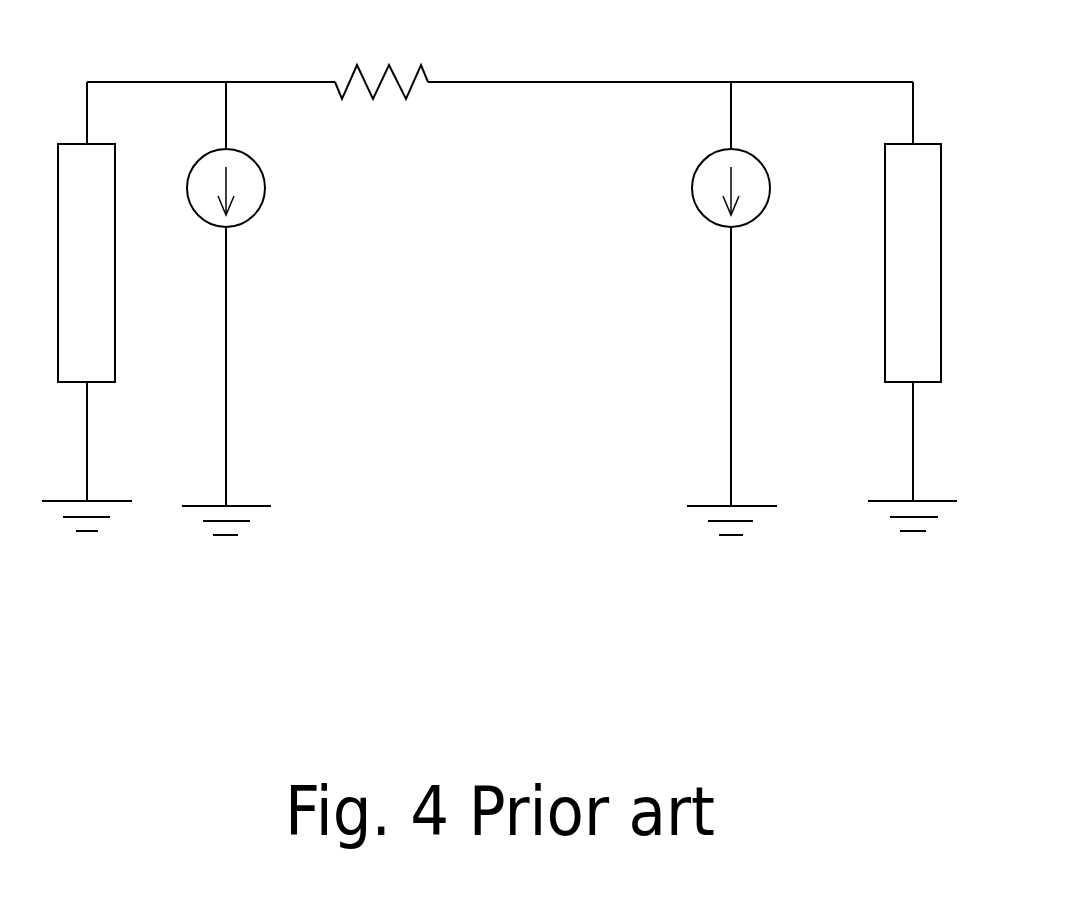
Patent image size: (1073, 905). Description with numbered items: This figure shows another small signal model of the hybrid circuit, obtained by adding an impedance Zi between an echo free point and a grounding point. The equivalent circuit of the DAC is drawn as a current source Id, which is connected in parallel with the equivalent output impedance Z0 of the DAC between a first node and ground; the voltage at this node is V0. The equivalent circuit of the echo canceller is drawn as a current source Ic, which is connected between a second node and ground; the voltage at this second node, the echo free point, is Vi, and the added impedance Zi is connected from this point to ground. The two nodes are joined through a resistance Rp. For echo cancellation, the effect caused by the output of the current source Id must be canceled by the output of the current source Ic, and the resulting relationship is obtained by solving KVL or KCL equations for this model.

The output node voltage V0 is at (211, 48).
The echo free point voltage Vi is at (670, 50).
The resistance Rp is at (381, 111).
The equivalent output impedance Z0 is at (120, 263).
The impedance Zi is at (952, 263).
The current source Id is at (272, 190).
The current source Ic is at (766, 193).